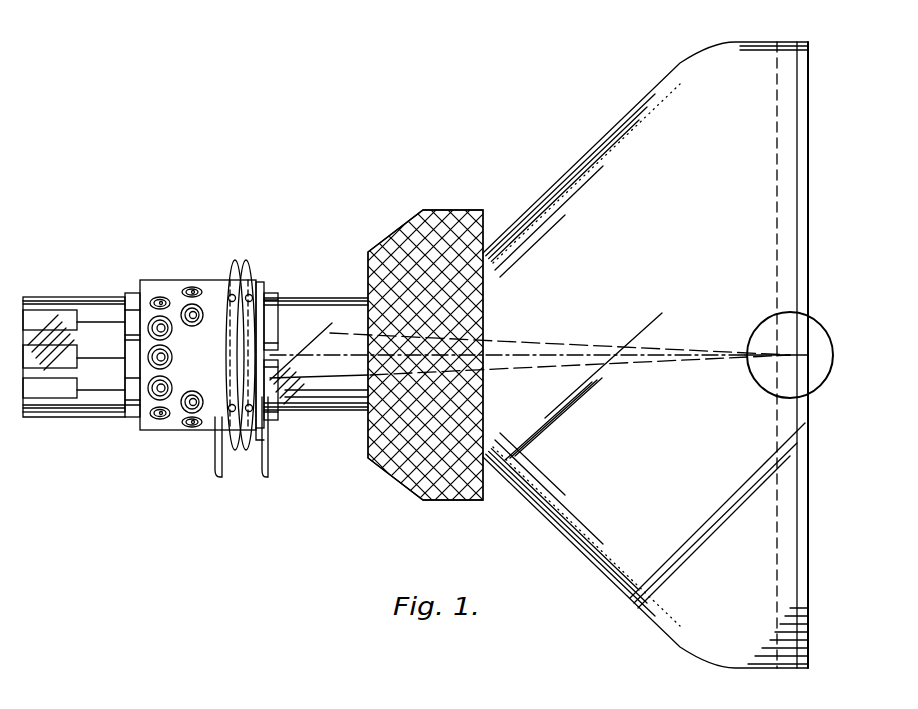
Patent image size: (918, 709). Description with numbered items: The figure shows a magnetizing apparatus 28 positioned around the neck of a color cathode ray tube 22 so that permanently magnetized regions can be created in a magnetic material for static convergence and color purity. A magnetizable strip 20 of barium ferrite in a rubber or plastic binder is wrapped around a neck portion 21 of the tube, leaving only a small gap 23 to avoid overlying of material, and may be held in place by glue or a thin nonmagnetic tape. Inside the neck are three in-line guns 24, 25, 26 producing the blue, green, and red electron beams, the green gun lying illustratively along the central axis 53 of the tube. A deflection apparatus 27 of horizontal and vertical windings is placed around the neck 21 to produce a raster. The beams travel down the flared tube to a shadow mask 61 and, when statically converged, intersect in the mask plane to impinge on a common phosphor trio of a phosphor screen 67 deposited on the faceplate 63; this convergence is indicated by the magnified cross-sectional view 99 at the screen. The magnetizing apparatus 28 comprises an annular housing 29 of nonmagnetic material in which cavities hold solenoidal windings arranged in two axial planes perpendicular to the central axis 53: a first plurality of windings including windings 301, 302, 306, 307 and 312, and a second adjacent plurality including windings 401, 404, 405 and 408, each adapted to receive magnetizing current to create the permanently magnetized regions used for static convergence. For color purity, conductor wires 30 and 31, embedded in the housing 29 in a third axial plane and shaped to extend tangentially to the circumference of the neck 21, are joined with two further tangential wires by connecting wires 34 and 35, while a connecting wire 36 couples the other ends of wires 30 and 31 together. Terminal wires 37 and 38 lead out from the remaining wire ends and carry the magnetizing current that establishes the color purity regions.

The magnetizable strip 20 is at (270, 300).
The neck portion 21 is at (326, 412).
The cathode ray tube 22 is at (523, 147).
The gap 23 is at (270, 352).
The in-line gun 24 is at (82, 389).
The in-line gun 25 is at (82, 357).
The in-line gun 26 is at (84, 310).
The deflection apparatus 27 is at (436, 210).
The magnetizing apparatus 28 is at (224, 205).
The annular housing 29 is at (175, 280).
The conductor wire 30 is at (229, 411).
The conductor wire 31 is at (246, 411).
The connecting wire 34 is at (246, 262).
The connecting wire 35 is at (235, 262).
The connecting wire 36 is at (258, 444).
The terminal wire 37 is at (222, 478).
The terminal wire 38 is at (268, 478).
The central axis 53 is at (527, 358).
The shadow mask 61 is at (777, 101).
The faceplate 63 is at (808, 176).
The phosphor screen 67 is at (797, 120).
The magnified cross-sectional view 99 is at (822, 327).
The solenoidal winding 301 is at (262, 357).
The solenoidal winding 302 is at (163, 297).
The solenoidal winding 306 is at (153, 416).
The solenoidal winding 307 is at (150, 322).
The solenoidal winding 312 is at (115, 410).
The solenoidal winding 401 is at (262, 330).
The solenoidal winding 404 is at (262, 383).
The solenoidal winding 405 is at (191, 287).
The solenoidal winding 408 is at (187, 426).